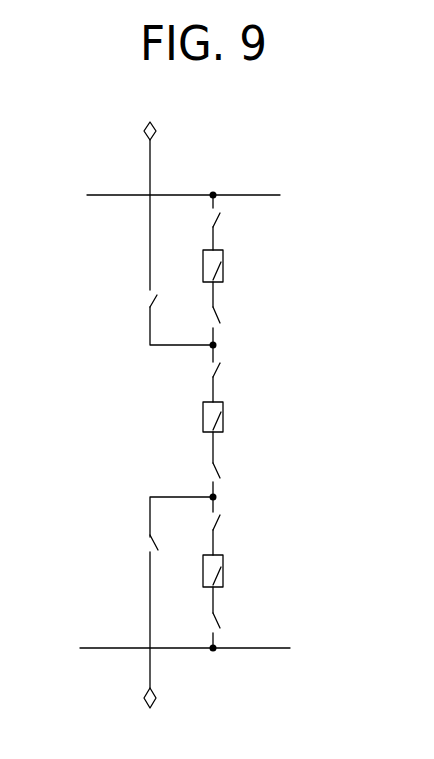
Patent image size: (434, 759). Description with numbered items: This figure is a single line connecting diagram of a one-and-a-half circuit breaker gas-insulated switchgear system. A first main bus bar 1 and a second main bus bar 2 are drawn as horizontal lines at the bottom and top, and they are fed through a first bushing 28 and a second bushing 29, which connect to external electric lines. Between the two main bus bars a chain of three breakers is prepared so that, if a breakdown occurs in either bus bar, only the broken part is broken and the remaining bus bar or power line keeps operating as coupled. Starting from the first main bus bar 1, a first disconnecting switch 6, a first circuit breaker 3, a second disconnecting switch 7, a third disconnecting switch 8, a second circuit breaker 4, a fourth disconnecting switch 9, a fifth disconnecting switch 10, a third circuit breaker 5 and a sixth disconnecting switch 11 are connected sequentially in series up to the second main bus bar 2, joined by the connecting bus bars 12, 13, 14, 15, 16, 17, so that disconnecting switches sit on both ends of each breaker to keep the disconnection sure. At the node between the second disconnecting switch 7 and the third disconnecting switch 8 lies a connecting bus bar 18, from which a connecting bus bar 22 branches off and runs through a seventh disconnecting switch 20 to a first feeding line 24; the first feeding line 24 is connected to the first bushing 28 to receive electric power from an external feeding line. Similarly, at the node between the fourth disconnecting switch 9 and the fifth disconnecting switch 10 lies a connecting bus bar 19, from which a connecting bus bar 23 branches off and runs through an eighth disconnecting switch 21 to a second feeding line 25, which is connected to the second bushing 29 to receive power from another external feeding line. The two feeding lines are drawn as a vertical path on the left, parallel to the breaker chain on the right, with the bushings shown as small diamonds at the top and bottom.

The first main bus bar 1 is at (103, 648).
The second main bus bar 2 is at (104, 195).
The first circuit breaker 3 is at (223, 572).
The second circuit breaker 4 is at (223, 420).
The third circuit breaker 5 is at (223, 265).
The first disconnecting switch 6 is at (222, 620).
The second disconnecting switch 7 is at (223, 523).
The third disconnecting switch 8 is at (222, 472).
The fourth disconnecting switch 9 is at (222, 372).
The fifth disconnecting switch 10 is at (222, 317).
The sixth disconnecting switch 11 is at (222, 223).
The connecting bus bar 12 is at (215, 597).
The connecting bus bar 13 is at (215, 543).
The connecting bus bar 14 is at (215, 447).
The connecting bus bar 15 is at (215, 388).
The connecting bus bar 16 is at (215, 295).
The connecting bus bar 17 is at (215, 238).
The connecting bus bar 18 is at (217, 495).
The connecting bus bar 19 is at (217, 343).
The seventh disconnecting switch 20 is at (150, 542).
The eighth disconnecting switch 21 is at (150, 298).
The connecting bus bar 22 is at (173, 497).
The connecting bus bar 23 is at (180, 345).
The first feeding line 24 is at (150, 578).
The second feeding line 25 is at (150, 239).
The first bushing 28 is at (157, 690).
The second bushing 29 is at (153, 123).